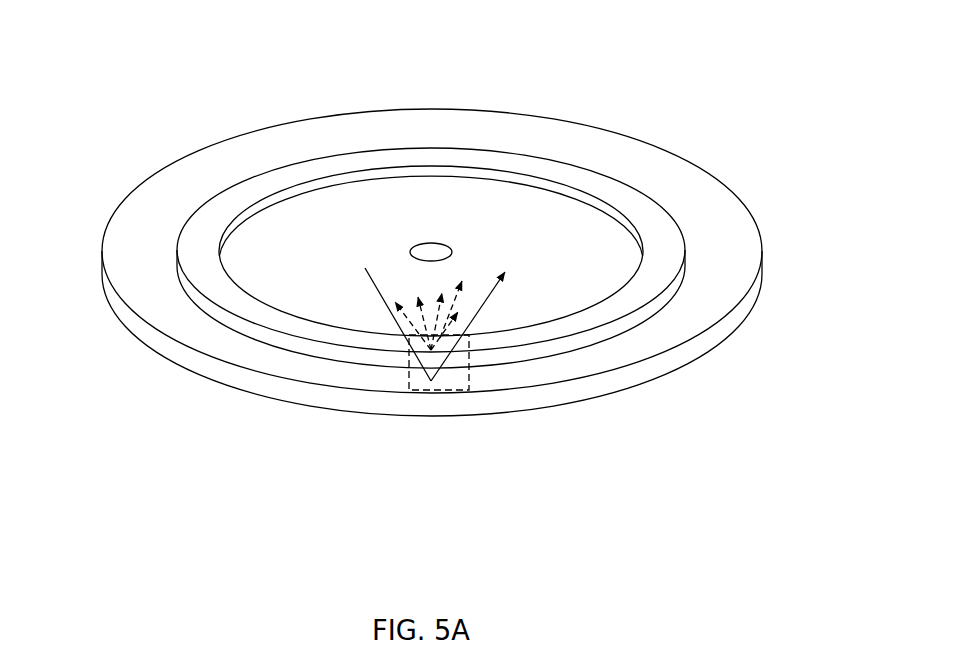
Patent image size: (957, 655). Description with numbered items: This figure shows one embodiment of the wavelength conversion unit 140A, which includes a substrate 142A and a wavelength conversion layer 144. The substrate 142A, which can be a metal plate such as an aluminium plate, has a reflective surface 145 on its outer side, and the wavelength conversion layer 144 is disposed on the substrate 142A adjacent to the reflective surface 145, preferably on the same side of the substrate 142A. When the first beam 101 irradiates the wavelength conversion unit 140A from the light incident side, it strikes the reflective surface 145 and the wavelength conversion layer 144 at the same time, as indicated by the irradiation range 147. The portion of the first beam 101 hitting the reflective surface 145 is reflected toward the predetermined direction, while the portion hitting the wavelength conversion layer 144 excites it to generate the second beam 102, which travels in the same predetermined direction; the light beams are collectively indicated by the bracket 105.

The wavelength conversion unit 140A is at (118, 31).
The reflective surface 145 is at (148, 298).
The substrate 142A is at (202, 364).
The wavelength conversion layer 144 is at (657, 263).
The irradiation range 147 is at (408, 375).
The light 105 is at (686, 81).
The first beam 101 is at (652, 107).
The second beam 102 is at (462, 284).